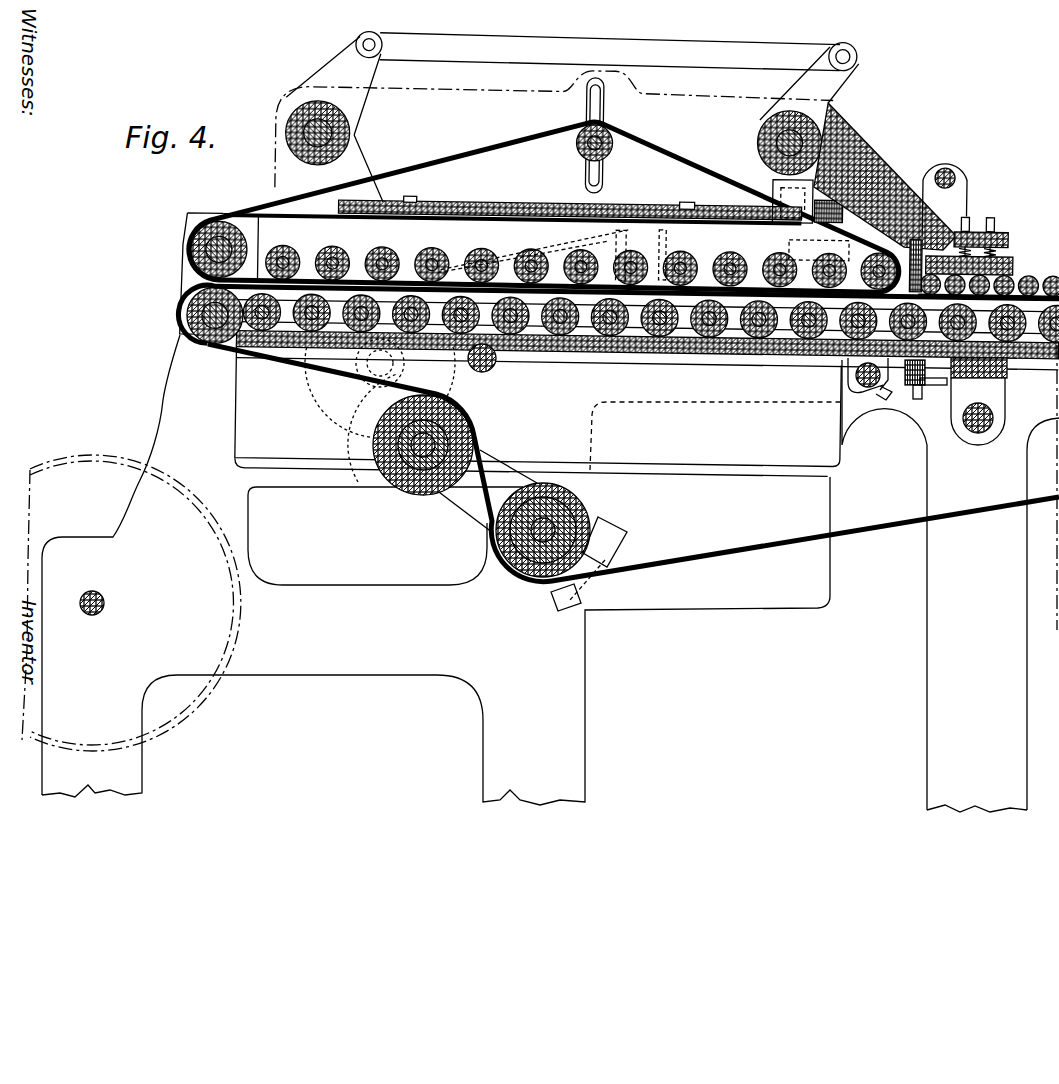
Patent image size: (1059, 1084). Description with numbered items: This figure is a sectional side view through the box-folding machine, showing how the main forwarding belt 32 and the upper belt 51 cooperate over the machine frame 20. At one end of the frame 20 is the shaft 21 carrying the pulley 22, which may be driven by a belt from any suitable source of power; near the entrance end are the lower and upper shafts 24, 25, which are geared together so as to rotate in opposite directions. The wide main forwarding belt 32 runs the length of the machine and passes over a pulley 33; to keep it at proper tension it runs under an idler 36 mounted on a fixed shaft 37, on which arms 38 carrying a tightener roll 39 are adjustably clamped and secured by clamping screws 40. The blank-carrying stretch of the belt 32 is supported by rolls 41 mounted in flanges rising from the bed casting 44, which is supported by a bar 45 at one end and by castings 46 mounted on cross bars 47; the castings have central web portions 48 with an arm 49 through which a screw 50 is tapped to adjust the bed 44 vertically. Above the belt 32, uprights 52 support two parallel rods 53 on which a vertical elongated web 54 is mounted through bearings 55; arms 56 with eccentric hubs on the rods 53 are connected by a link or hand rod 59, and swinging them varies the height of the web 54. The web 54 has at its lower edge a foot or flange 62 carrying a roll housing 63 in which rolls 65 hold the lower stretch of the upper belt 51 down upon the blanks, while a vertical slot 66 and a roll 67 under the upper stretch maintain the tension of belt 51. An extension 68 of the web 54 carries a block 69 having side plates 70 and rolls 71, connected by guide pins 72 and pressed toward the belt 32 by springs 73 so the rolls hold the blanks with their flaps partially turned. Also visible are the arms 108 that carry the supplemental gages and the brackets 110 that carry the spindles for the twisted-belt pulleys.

The frame 20 is at (550, 573).
The shaft 21 is at (106, 603).
The pulley 22 is at (205, 712).
The lower shaft 24 is at (190, 317).
The upper shaft 25 is at (192, 246).
The main forwarding belt 32 is at (203, 286).
The pulley 33 is at (188, 336).
The idler 36 is at (592, 500).
The fixed shaft 37 is at (520, 568).
The arms 38 is at (475, 510).
The tightener roll 39 is at (400, 492).
The clamping screws 40 is at (635, 528).
The rolls 41 is at (565, 348).
The bed casting 44 is at (510, 350).
The bar 45 is at (487, 372).
The castings 46 is at (995, 418).
The cross bars 47 is at (980, 435).
The central web portions 48 is at (953, 390).
The arm 49 is at (942, 374).
The screw 50 is at (858, 396).
The upper belt 51 is at (462, 152).
The uprights 52 is at (350, 170).
The parallel rods 53 is at (350, 132).
The vertical elongated web 54 is at (471, 97).
The bearings 55 is at (283, 103).
The arms 56 is at (336, 62).
The link or hand rod 59 is at (730, 46).
The foot or flange 62 is at (537, 213).
The roll housing 63 is at (483, 199).
The rolls 65 is at (482, 255).
The vertical slot 66 is at (605, 111).
The roll 67 is at (612, 152).
The extension 68 is at (878, 140).
The block 69 is at (1020, 262).
The side plates 70 is at (1030, 272).
The rolls 71 is at (925, 266).
The guide pins 72 is at (970, 207).
The springs 73 is at (1000, 235).
The arms 108 is at (950, 166).
The brackets 110 is at (900, 173).